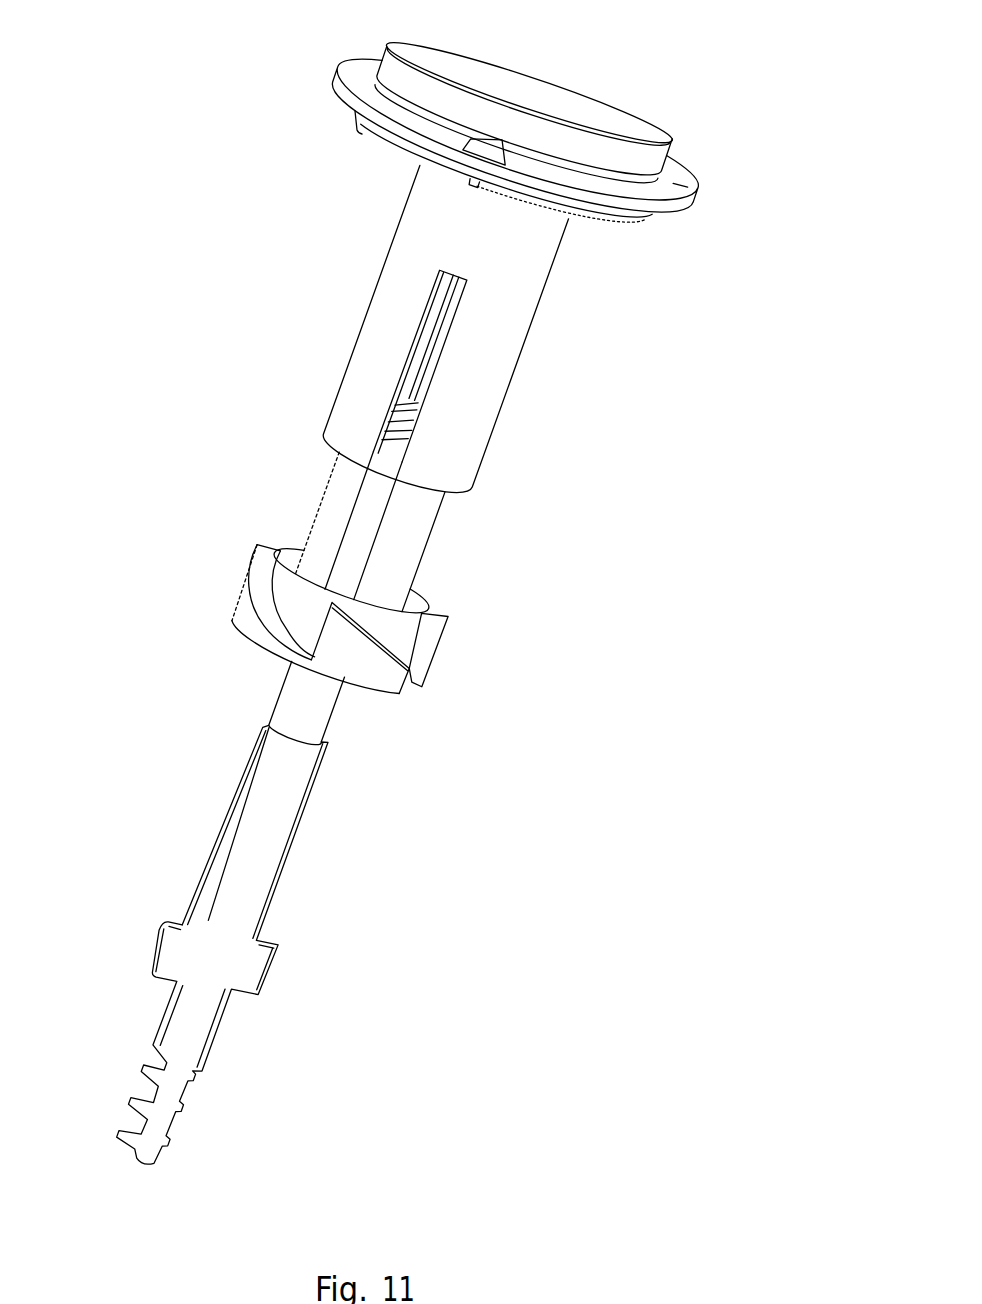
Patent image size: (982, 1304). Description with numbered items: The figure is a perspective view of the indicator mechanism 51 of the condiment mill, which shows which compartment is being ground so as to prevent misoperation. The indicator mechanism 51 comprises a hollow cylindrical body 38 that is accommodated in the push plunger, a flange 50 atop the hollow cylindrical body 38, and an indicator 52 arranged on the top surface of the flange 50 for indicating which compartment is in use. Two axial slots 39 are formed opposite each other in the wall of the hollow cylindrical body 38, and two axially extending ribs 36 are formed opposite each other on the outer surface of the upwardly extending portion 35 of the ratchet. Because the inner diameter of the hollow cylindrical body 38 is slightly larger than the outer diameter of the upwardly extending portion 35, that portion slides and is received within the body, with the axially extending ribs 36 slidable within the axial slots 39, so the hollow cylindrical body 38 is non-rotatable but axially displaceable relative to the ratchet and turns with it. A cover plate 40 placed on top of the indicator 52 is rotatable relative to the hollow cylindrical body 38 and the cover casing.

The upwardly extending portion 35 is at (335, 505).
The axially extending ribs 36 is at (372, 513).
The hollow cylindrical body 38 is at (395, 320).
The axial slots 39 is at (418, 373).
The cover plate 40 is at (353, 87).
The flange 50 is at (517, 187).
The indicator mechanism 51 is at (683, 92).
The indicator 52 is at (615, 198).